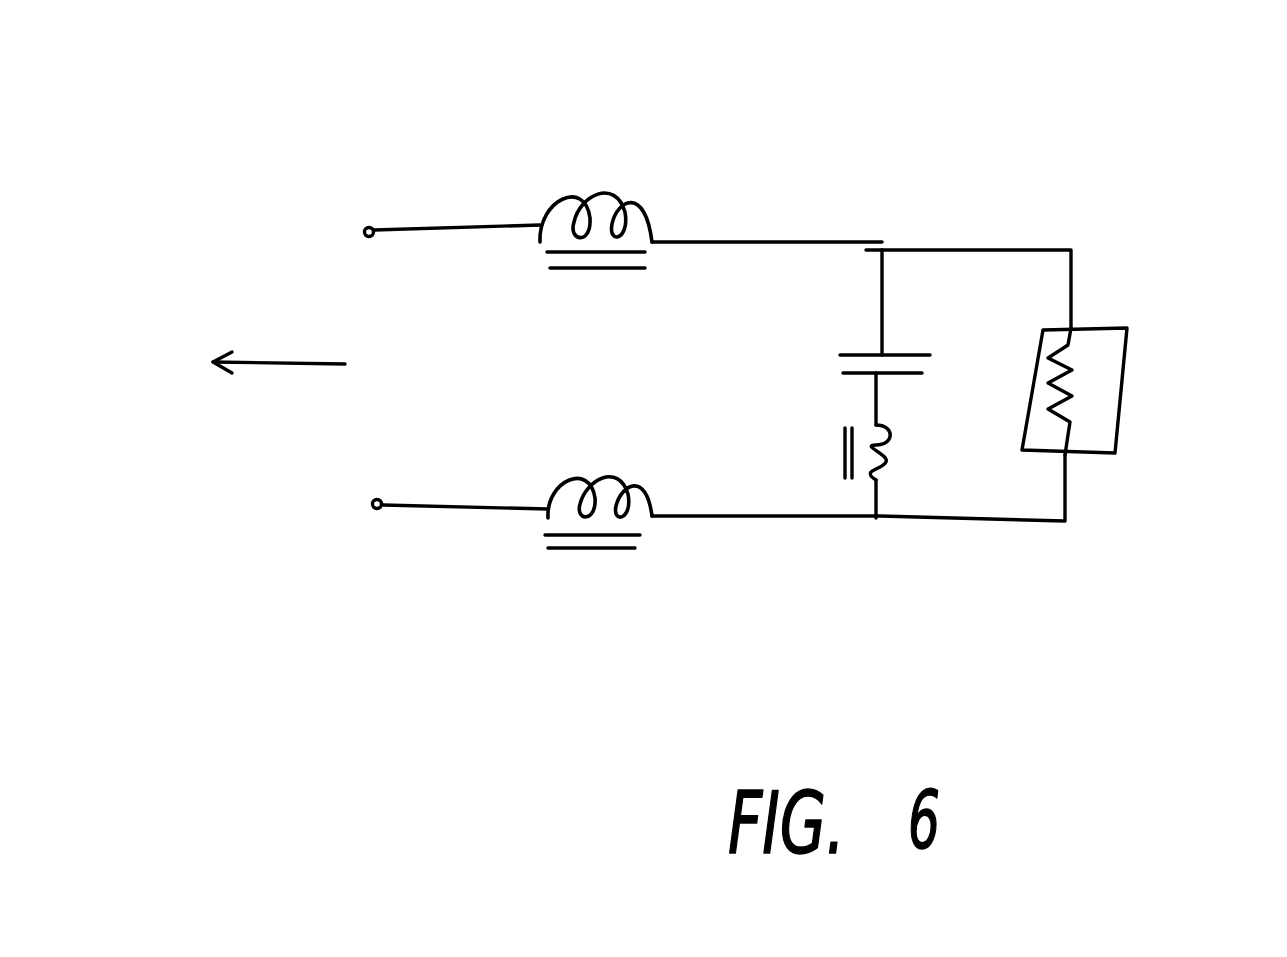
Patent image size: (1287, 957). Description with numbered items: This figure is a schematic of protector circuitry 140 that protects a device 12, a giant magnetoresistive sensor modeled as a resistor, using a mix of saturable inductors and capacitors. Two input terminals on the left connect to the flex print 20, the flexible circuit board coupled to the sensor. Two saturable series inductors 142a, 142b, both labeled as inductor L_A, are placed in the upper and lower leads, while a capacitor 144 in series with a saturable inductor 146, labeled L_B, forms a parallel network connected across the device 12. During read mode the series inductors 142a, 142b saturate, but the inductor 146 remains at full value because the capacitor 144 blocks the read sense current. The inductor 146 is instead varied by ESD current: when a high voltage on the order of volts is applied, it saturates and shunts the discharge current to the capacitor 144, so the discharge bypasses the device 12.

The protector circuitry 140 is at (1112, 155).
The flex print 20 is at (212, 443).
The saturable series inductor 142a is at (628, 172).
The saturable series inductor 142b is at (560, 565).
The capacitor 144 is at (822, 365).
The saturable inductor 146 is at (900, 475).
The device 12 is at (1097, 327).